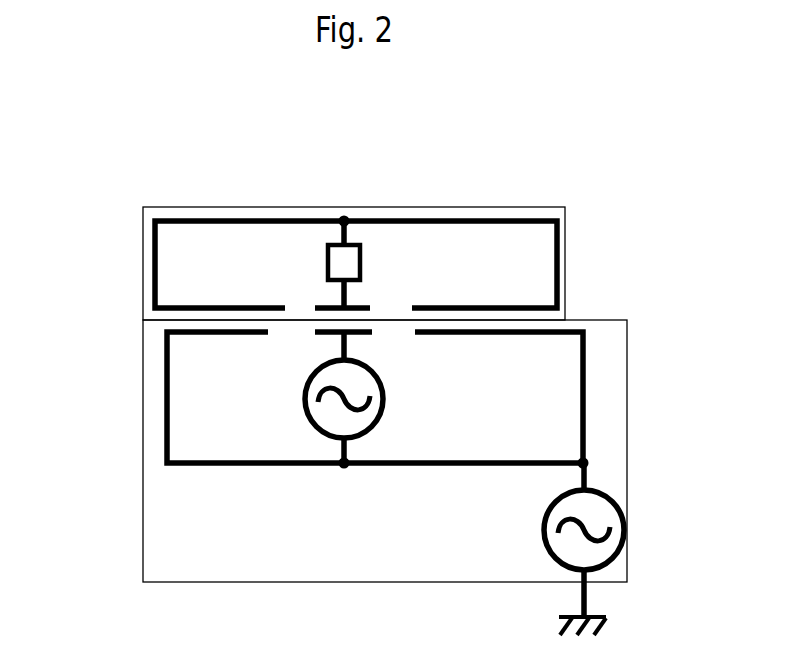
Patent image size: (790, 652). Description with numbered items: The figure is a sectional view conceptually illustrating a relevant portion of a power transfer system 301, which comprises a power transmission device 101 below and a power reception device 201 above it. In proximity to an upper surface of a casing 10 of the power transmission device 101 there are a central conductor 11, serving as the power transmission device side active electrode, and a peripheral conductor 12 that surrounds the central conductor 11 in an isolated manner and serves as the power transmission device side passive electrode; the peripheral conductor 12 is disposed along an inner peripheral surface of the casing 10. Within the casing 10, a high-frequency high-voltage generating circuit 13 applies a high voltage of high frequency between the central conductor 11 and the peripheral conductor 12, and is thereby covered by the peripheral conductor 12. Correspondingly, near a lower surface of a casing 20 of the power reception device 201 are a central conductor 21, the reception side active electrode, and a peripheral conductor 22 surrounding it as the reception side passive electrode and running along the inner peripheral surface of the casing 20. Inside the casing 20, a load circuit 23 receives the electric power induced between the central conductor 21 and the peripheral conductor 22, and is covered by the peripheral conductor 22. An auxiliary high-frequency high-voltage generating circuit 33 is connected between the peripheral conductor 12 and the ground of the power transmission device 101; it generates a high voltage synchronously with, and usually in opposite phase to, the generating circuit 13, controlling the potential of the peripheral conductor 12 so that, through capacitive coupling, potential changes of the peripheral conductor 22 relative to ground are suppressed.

The power transfer system 301 is at (627, 120).
The power reception device 201 is at (118, 263).
The power transmission device 101 is at (118, 413).
The casing 20 is at (565, 207).
The peripheral conductor 22 is at (557, 259).
The central conductor 21 is at (360, 302).
The load circuit 23 is at (328, 262).
The casing 10 is at (627, 320).
The peripheral conductor 12 is at (584, 400).
The central conductor 11 is at (330, 336).
The high-frequency high-voltage generating circuit 13 is at (384, 398).
The auxiliary high-frequency high-voltage generating circuit 33 is at (621, 500).